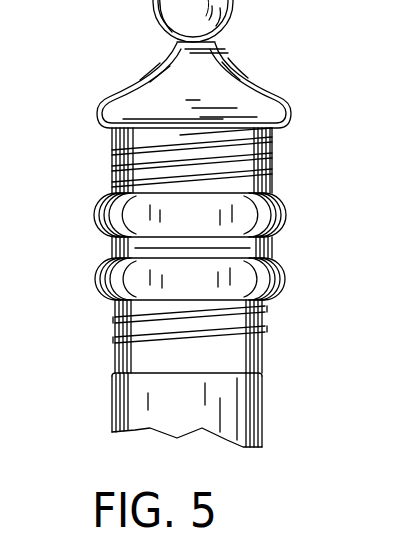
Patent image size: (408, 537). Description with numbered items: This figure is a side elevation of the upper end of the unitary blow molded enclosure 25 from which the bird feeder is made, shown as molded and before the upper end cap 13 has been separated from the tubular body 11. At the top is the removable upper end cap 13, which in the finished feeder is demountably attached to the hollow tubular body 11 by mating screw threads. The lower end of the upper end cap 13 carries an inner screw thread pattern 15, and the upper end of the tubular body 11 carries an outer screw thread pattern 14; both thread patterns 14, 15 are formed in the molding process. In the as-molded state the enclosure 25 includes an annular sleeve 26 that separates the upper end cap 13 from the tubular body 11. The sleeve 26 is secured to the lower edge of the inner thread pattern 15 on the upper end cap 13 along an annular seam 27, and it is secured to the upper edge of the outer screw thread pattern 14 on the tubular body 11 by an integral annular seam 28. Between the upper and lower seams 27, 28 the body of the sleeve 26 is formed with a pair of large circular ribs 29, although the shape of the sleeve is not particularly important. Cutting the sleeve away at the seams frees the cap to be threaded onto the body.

The tubular body 11 is at (237, 428).
The upper end cap 13 is at (252, 108).
The outer screw thread pattern 14 is at (208, 337).
The inner screw thread pattern 15 is at (112, 165).
The unitary blow molded enclosure 25 is at (313, 278).
The annular sleeve 26 is at (100, 193).
The annular seam 27 is at (272, 199).
The integral annular seam 28 is at (115, 300).
The large circular ribs 29 is at (285, 222).